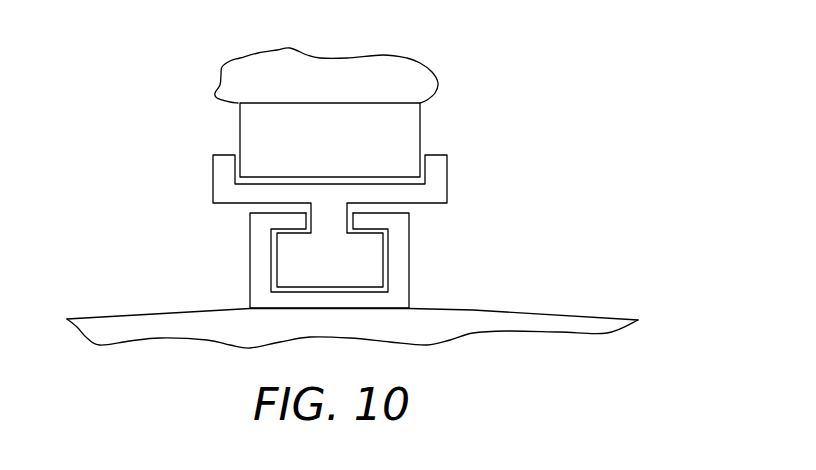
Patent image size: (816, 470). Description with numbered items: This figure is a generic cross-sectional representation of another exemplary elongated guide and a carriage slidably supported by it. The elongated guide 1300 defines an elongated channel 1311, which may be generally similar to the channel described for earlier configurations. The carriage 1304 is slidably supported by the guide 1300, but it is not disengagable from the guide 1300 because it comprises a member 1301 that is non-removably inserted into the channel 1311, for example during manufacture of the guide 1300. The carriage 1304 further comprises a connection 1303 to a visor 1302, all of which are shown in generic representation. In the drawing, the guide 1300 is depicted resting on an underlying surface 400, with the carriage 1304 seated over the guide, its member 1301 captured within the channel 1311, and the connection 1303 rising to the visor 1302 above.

The substrate / circuit board 400 is at (567, 323).
The elongated guide 1300 is at (339, 260).
The member 1301 is at (287, 253).
The visor 1302 is at (403, 70).
The connection 1303 is at (253, 120).
The carriage 1304 is at (437, 168).
The elongated channel 1311 is at (360, 273).